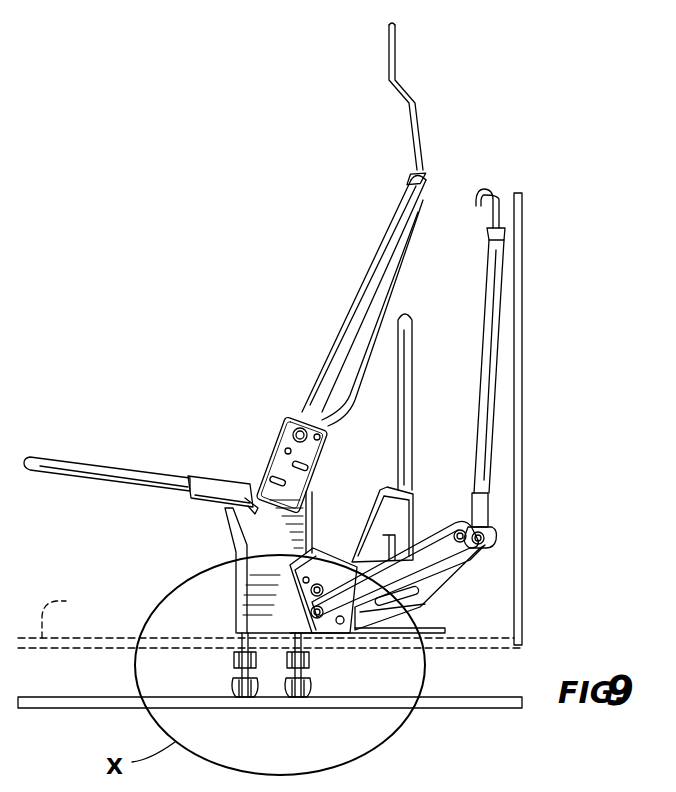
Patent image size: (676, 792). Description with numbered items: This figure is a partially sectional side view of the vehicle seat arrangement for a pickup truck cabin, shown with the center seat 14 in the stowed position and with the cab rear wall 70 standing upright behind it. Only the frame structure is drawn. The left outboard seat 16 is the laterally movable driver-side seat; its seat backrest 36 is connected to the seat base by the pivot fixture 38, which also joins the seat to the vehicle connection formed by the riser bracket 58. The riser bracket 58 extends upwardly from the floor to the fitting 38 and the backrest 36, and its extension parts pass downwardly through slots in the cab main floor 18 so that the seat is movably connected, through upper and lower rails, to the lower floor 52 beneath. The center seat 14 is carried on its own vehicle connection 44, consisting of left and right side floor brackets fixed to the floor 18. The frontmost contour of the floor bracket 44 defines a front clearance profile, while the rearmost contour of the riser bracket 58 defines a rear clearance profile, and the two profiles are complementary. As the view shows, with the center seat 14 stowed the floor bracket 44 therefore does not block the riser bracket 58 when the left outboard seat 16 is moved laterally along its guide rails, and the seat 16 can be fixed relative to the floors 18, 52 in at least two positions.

The center seat 14 is at (456, 384).
The left outboard seat 16 is at (106, 440).
The cab main floor 18 is at (270, 619).
The seat backrest 36 is at (355, 300).
The pivot fixture 38 is at (280, 455).
The vehicle connection 44 is at (326, 577).
The lower floor 52 is at (86, 706).
The connection bracket 58 is at (245, 531).
The cab rear wall 70 is at (518, 556).